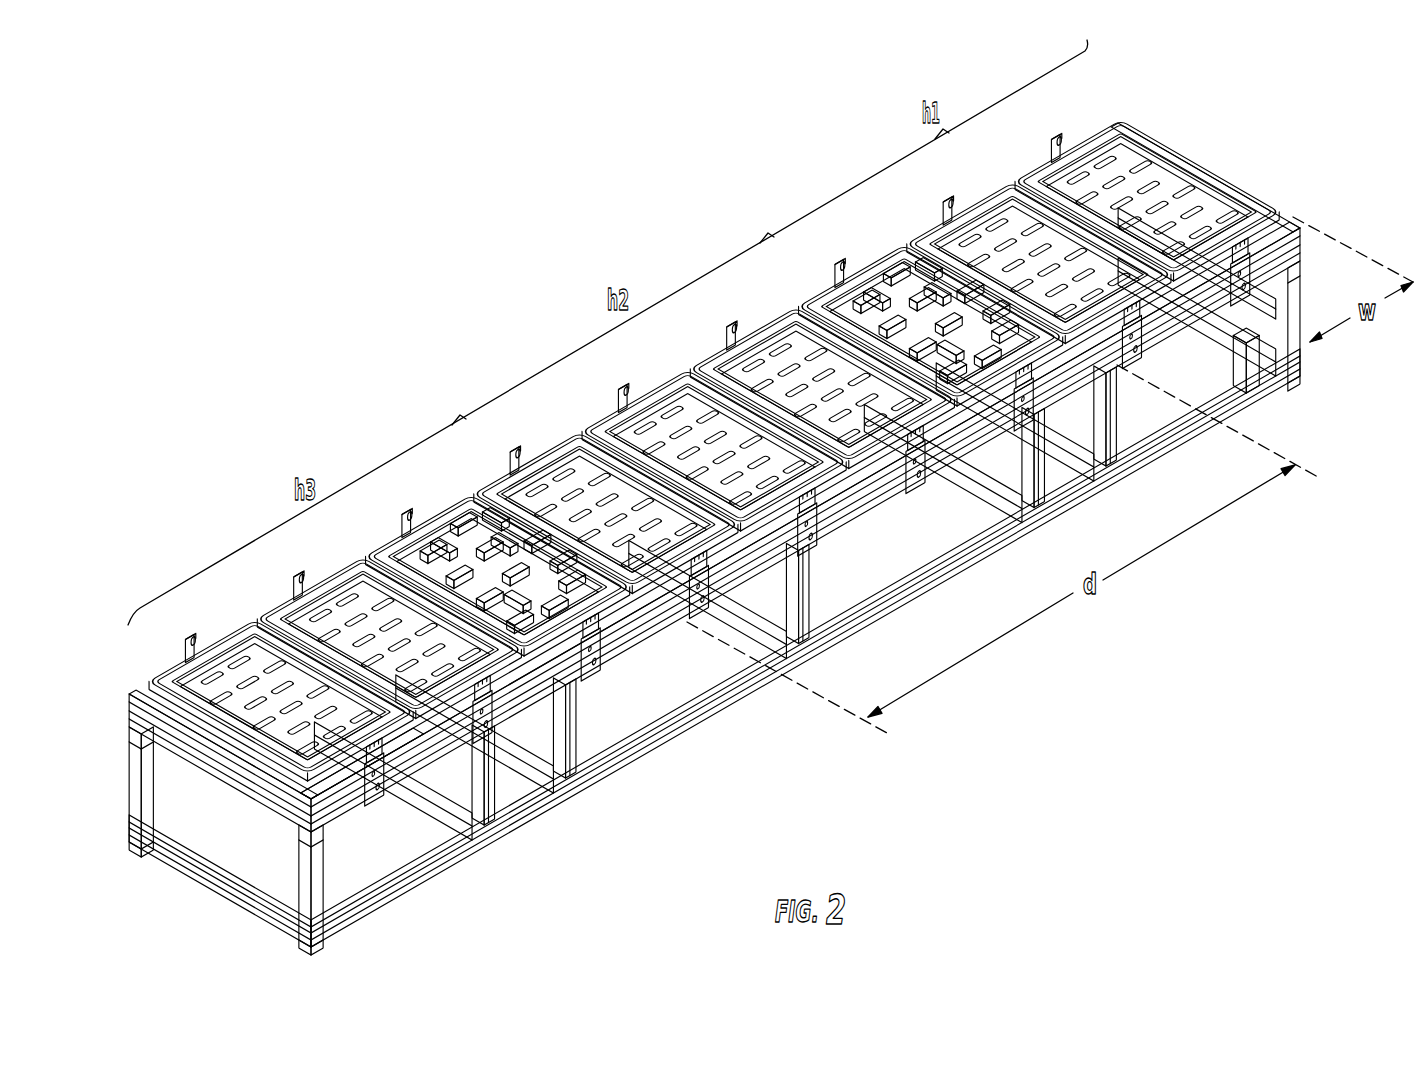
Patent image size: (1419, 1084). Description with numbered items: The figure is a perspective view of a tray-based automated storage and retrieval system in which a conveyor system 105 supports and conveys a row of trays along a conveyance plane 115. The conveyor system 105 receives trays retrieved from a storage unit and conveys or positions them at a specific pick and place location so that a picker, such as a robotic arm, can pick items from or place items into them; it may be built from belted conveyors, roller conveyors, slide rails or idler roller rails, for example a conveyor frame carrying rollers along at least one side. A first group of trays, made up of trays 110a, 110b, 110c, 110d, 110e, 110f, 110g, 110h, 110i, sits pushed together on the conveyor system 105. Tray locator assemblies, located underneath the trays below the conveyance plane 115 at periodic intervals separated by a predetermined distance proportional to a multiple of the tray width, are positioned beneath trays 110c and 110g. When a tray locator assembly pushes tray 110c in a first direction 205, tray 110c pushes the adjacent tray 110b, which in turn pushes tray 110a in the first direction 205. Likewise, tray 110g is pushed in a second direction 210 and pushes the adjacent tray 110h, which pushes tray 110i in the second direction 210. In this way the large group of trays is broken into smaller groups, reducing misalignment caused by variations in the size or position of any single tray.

The conveyor system 105 is at (1265, 210).
The tray 110a is at (1097, 165).
The tray 110b is at (988, 227).
The tray 110c is at (873, 298).
The tray 110d is at (772, 355).
The tray 110e is at (663, 412).
The tray 110f is at (553, 480).
The tray 110g is at (455, 545).
The tray 110h is at (334, 604).
The tray 110i is at (229, 667).
The conveyance plane 115 is at (205, 757).
The first direction 205 is at (1217, 150).
The second direction 210 is at (103, 766).